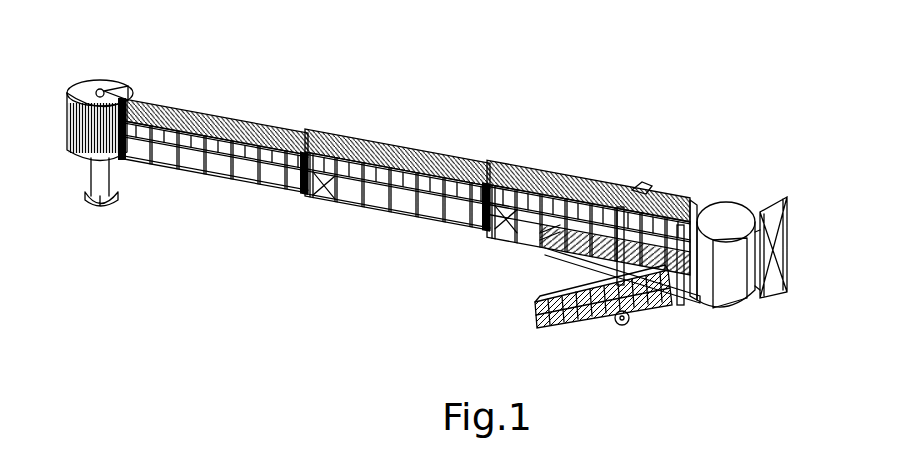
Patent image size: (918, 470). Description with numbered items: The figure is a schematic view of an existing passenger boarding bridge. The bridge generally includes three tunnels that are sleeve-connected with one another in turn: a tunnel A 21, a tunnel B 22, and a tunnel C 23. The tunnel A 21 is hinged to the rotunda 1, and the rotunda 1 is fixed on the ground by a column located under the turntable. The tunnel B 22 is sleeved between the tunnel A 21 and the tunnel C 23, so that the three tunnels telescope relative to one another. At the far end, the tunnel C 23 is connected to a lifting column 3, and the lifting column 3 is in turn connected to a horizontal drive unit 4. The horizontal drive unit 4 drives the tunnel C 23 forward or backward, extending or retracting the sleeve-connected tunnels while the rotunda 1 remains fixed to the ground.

The rotunda 1 is at (110, 80).
The tunnel A 21 is at (220, 110).
The tunnel B 22 is at (378, 140).
The tunnel C 23 is at (515, 163).
The lifting column 3 is at (642, 182).
The horizontal drive unit 4 is at (627, 317).